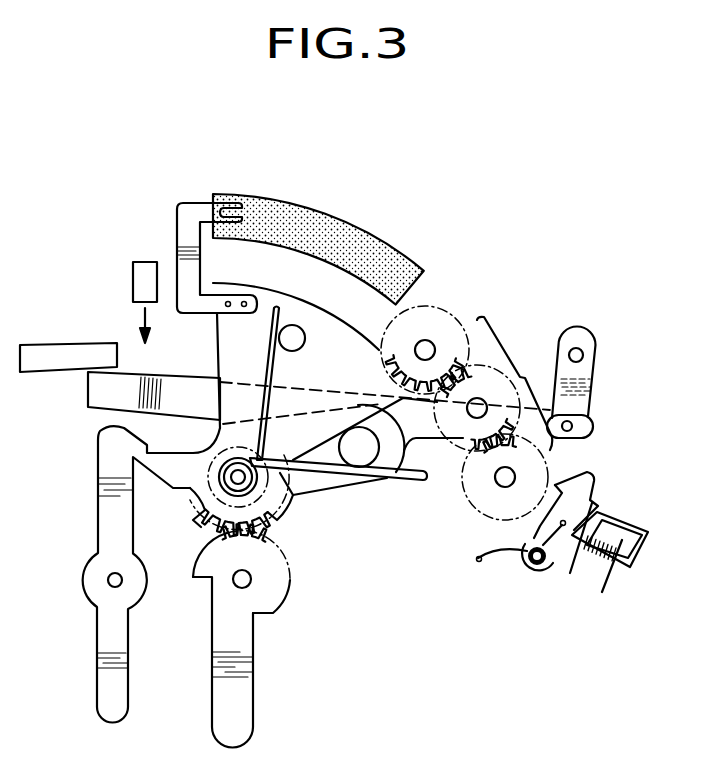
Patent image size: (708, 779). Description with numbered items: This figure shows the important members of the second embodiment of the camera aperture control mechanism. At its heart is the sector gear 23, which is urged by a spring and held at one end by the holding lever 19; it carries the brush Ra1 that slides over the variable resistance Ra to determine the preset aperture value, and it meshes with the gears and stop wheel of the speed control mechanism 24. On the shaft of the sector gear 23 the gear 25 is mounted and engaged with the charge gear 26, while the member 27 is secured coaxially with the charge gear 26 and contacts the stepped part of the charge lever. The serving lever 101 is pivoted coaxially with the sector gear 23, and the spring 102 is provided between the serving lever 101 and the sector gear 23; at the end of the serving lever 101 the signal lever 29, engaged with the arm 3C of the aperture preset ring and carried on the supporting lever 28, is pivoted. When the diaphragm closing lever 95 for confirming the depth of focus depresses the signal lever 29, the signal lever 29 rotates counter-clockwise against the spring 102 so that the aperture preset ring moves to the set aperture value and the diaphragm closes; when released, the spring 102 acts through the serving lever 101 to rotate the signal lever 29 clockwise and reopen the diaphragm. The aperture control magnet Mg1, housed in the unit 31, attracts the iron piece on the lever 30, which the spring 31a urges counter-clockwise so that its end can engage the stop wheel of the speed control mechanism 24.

The variable resistance Ra is at (355, 232).
The brush Ra1 is at (190, 212).
The diaphragm closing lever 95 is at (143, 262).
The arm of the aperture preset ring 3C is at (52, 352).
The signal lever 29 is at (105, 397).
The sector gear 23 is at (233, 360).
The holding lever 19 is at (108, 697).
The gear 25 is at (280, 513).
The serving lever 101 is at (337, 490).
The spring 102 is at (420, 481).
The speed control mechanism 24 is at (522, 378).
The supporting lever 28 is at (583, 377).
The lever 30 is at (590, 481).
The electromagnet housing 31 is at (598, 510).
The aperture control magnet Mg1 is at (633, 545).
The spring 31a is at (497, 558).
The charge gear 26 is at (282, 590).
The lever 27 is at (235, 703).